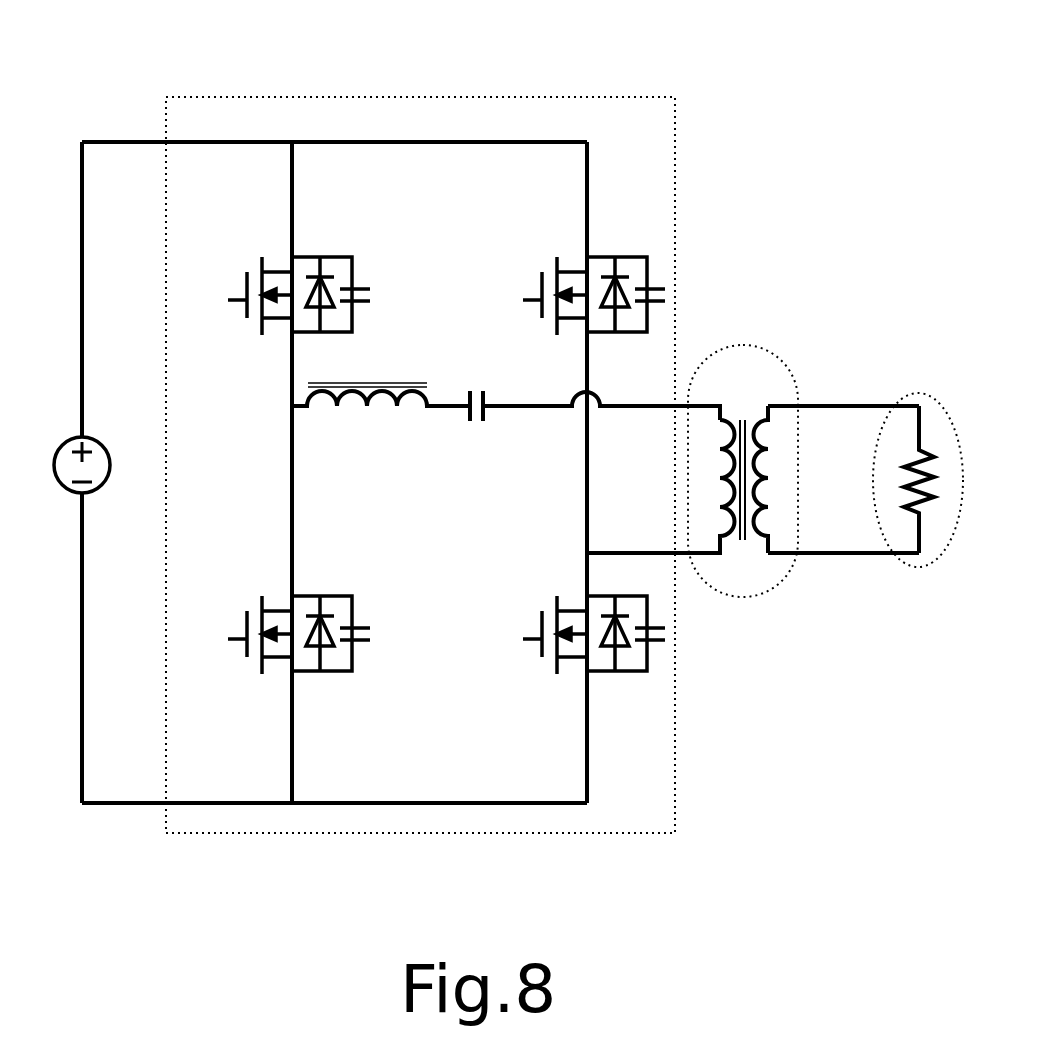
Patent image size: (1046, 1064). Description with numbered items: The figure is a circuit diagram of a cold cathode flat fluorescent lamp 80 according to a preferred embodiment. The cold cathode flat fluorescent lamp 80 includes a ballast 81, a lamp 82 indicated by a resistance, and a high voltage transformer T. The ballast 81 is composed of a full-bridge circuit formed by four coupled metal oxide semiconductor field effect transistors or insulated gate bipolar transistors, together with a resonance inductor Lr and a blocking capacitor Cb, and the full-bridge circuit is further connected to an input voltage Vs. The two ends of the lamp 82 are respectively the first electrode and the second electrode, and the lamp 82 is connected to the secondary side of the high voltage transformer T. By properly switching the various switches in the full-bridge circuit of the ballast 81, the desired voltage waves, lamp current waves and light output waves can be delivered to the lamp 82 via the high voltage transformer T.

The cold cathode flat fluorescent lamp 80 is at (508, 425).
The ballast 81 is at (210, 96).
The lamp 82 is at (928, 390).